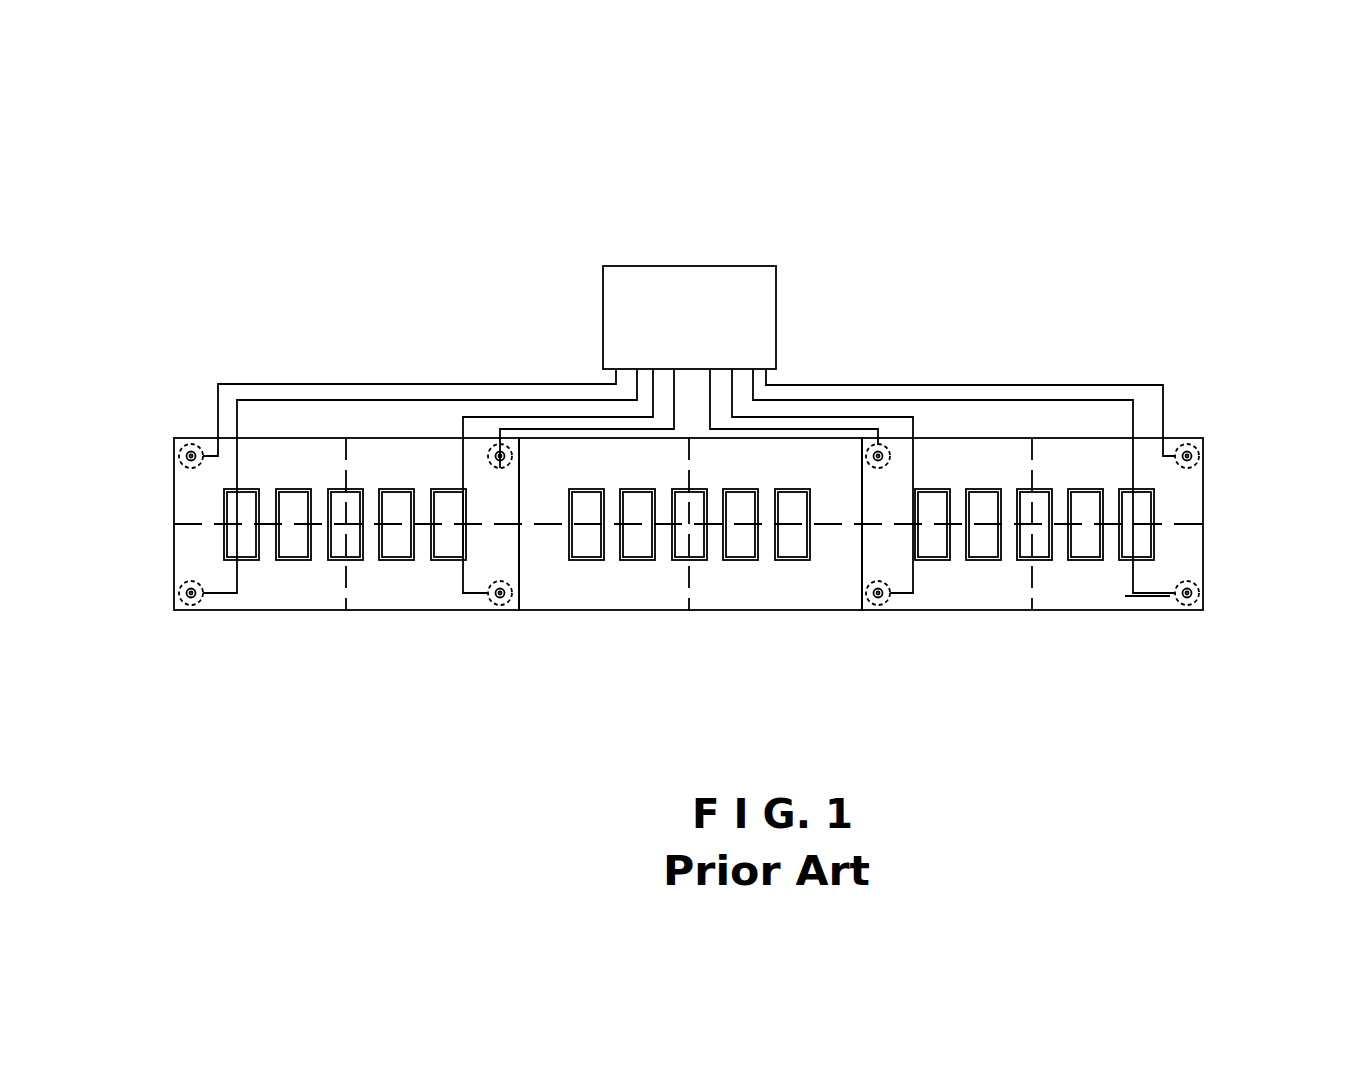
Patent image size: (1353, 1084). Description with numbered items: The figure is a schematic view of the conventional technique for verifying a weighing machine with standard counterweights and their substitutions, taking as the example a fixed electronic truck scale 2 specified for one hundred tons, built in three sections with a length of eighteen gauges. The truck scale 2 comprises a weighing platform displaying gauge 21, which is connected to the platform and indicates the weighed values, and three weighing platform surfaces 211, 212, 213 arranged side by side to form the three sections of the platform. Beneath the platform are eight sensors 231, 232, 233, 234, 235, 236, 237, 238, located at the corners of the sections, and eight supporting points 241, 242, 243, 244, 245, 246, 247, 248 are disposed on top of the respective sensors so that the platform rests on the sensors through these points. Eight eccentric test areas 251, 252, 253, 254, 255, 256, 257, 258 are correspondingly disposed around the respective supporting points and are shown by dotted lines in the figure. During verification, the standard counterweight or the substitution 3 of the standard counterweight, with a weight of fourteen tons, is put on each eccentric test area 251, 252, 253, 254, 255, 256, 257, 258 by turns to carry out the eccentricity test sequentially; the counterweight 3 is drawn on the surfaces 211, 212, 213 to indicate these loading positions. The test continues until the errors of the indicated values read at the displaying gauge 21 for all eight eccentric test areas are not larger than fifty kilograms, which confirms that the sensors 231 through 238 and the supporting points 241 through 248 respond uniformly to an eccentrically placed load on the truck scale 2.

The fixed electronic truck scale 2 is at (683, 200).
The weighing platform displaying gauge 21 is at (748, 308).
The weighing platform surface 211 is at (282, 588).
The weighing platform surface 212 is at (783, 580).
The weighing platform surface 213 is at (1093, 578).
The standard counterweight or substitution 3 is at (351, 542).
The sensor 231 is at (187, 592).
The sensor 232 is at (178, 445).
The sensor 233 is at (498, 443).
The sensor 234 is at (870, 447).
The sensor 235 is at (1185, 442).
The sensor 236 is at (1187, 583).
The sensor 237 is at (887, 598).
The sensor 238 is at (508, 600).
The supporting point 241 is at (192, 598).
The supporting point 242 is at (189, 458).
The supporting point 243 is at (500, 455).
The supporting point 244 is at (880, 453).
The supporting point 245 is at (1187, 456).
The supporting point 246 is at (1200, 593).
The supporting point 247 is at (879, 593).
The supporting point 248 is at (497, 595).
The eccentric test area 251 is at (312, 590).
The eccentric test area 252 is at (277, 468).
The eccentric test area 253 is at (565, 457).
The eccentric test area 254 is at (962, 455).
The eccentric test area 255 is at (1182, 495).
The eccentric test area 256 is at (1125, 595).
The eccentric test area 257 is at (982, 587).
The eccentric test area 258 is at (642, 583).